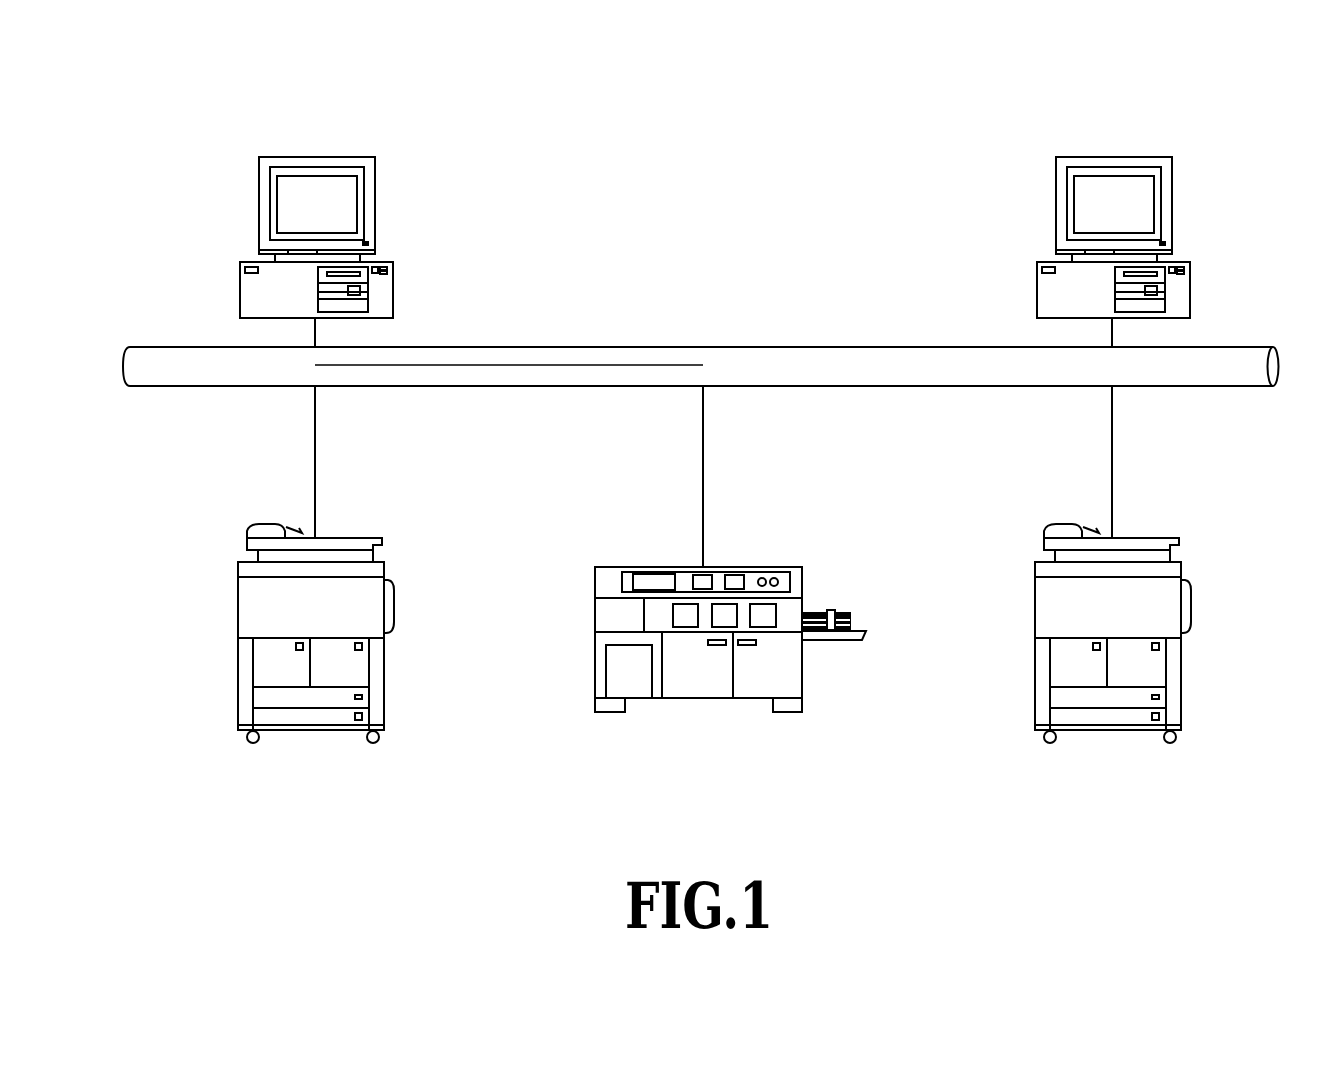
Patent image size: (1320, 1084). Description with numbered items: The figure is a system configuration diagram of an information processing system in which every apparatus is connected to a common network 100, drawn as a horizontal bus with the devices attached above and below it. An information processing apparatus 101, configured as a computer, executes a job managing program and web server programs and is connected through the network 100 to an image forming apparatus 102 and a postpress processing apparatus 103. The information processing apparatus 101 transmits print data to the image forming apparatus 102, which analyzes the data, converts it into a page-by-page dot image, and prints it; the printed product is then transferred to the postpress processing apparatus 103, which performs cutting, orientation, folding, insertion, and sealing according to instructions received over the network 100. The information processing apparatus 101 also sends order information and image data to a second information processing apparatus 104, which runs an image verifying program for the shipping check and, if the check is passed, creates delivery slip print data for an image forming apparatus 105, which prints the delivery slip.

The network 100 is at (872, 363).
The information processing apparatus 101 is at (307, 162).
The image forming apparatus 102 is at (308, 712).
The postpress processing apparatus 103 is at (700, 686).
The information processing apparatus 104 is at (1104, 162).
The image forming apparatus 105 is at (1105, 712).